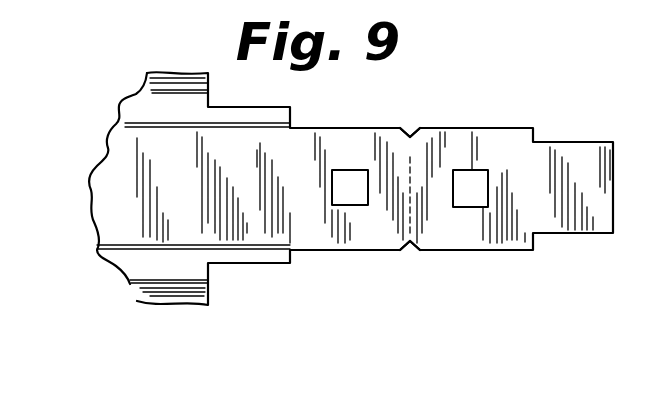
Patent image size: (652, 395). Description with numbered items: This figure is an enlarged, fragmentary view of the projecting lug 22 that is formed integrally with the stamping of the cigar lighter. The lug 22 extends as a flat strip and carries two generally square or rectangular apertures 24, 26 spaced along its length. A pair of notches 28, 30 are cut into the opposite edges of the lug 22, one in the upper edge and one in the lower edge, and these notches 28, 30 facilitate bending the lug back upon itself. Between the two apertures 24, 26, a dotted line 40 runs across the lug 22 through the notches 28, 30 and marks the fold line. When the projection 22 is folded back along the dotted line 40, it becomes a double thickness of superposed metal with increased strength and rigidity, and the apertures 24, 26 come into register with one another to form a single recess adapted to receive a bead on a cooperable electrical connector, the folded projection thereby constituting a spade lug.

The projecting lug 22 is at (564, 260).
The aperture 24 is at (478, 175).
The aperture 26 is at (345, 177).
The notch 28 is at (412, 127).
The notch 30 is at (412, 251).
The dotted line 40 is at (413, 150).